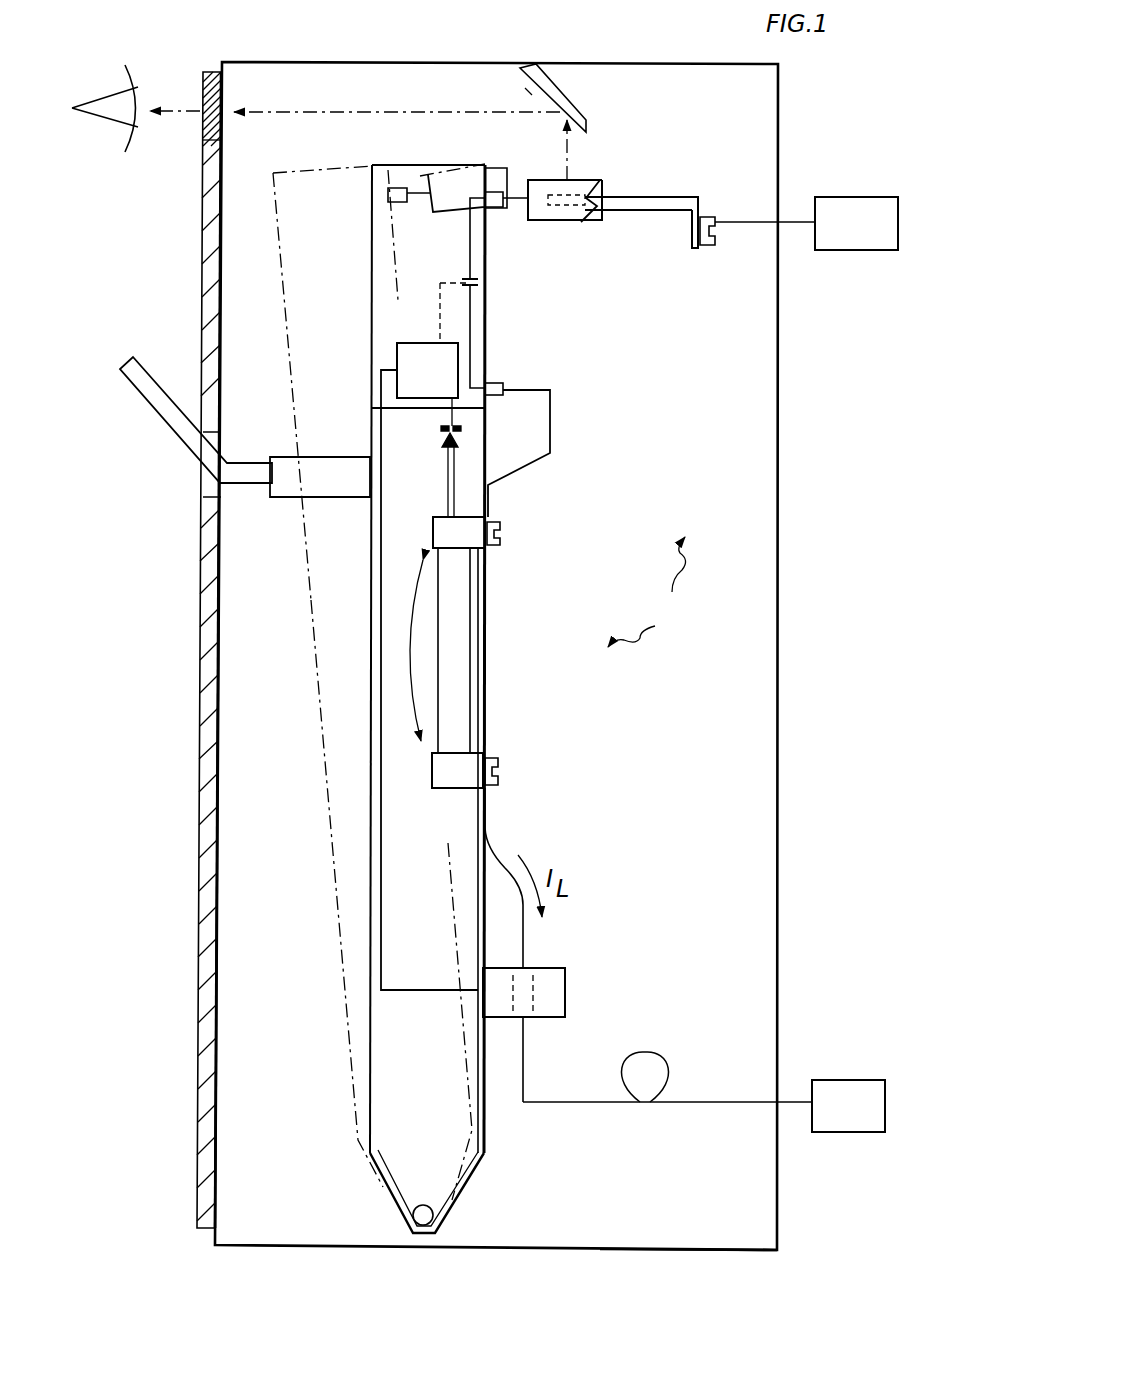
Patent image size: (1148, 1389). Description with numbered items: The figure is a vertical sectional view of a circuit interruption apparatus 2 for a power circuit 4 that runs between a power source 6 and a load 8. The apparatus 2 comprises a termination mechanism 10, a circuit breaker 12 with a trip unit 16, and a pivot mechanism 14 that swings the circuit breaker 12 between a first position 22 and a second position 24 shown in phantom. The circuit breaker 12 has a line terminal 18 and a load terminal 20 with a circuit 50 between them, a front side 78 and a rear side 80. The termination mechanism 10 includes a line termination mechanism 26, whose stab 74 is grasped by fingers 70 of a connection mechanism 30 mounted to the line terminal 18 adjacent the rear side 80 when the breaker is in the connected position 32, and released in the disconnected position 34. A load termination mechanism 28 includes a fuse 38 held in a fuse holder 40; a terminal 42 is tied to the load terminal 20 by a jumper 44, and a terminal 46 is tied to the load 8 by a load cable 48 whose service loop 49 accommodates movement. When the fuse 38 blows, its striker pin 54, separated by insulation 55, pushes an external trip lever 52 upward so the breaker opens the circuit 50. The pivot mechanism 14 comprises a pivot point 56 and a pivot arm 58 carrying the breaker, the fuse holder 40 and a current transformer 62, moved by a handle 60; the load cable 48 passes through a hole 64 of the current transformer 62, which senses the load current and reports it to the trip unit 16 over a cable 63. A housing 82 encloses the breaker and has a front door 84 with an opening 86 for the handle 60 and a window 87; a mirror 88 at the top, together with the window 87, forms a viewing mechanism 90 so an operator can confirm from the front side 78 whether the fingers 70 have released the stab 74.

The circuit interruption apparatus 2 is at (450, 1259).
The power circuit 4 is at (874, 640).
The power source 6 is at (857, 195).
The load 8 is at (845, 1078).
The termination mechanism 10 is at (650, 592).
The circuit breaker 12 is at (488, 325).
The pivot mechanism 14 is at (477, 1187).
The trip unit 16 is at (397, 348).
The line terminal 18 is at (395, 203).
The load terminal 20 is at (494, 382).
The first position 22 is at (403, 156).
The second position 24 is at (312, 162).
The line termination mechanism 26 is at (656, 191).
The load termination mechanism 28 is at (525, 793).
The connection mechanism 30 is at (550, 226).
The connected position 32 is at (594, 245).
The disconnected position 34 is at (496, 159).
The fuse 38 is at (476, 602).
The fuse holder 40 is at (407, 650).
The terminal 42 is at (501, 524).
The jumper 44 is at (552, 413).
The terminal 46 is at (499, 760).
The load cable 48 is at (712, 1100).
The service loop 49 is at (647, 1054).
The circuit 50 is at (457, 269).
The external trip lever 52 is at (461, 424).
The striker pin 54 is at (448, 492).
The insulation 55 is at (442, 434).
The pivot point 56 is at (413, 1214).
The pivot arm 58 is at (350, 1010).
The handle 60 is at (166, 400).
The current transformer 62 is at (566, 972).
The cable 63 is at (398, 993).
The hole 64 is at (533, 1008).
The fingers 70 is at (504, 174).
The stab 74 is at (630, 208).
The front side 78 is at (372, 313).
The rear side 80 is at (487, 293).
The housing 82 is at (666, 1254).
The front door 84 is at (202, 827).
The opening 86 is at (210, 492).
The window 87 is at (205, 124).
The mirror 88 is at (548, 66).
The viewing mechanism 90 is at (187, 93).